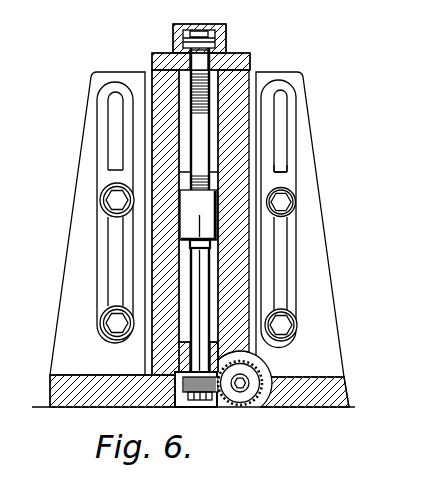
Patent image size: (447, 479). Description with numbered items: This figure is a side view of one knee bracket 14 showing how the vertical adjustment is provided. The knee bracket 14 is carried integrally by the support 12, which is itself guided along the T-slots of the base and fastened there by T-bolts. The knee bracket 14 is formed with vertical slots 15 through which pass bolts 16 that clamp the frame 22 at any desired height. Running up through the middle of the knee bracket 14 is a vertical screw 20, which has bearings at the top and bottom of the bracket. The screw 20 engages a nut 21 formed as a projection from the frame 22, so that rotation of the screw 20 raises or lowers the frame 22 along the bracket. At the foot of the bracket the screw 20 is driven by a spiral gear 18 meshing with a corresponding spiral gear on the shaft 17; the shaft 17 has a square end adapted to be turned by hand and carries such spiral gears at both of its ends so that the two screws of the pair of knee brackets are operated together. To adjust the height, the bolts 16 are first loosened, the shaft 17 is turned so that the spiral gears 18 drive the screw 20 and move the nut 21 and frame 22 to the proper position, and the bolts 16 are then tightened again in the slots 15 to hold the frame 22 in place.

The support 12 is at (342, 390).
The knee bracket 14 is at (324, 293).
The vertical slot 15 is at (117, 254).
The bolt 16 is at (117, 200).
The shaft 17 is at (242, 387).
The spiral gear 18 is at (239, 387).
The vertical screw 20 is at (200, 136).
The nut 21 is at (207, 221).
The frame 22 is at (277, 172).